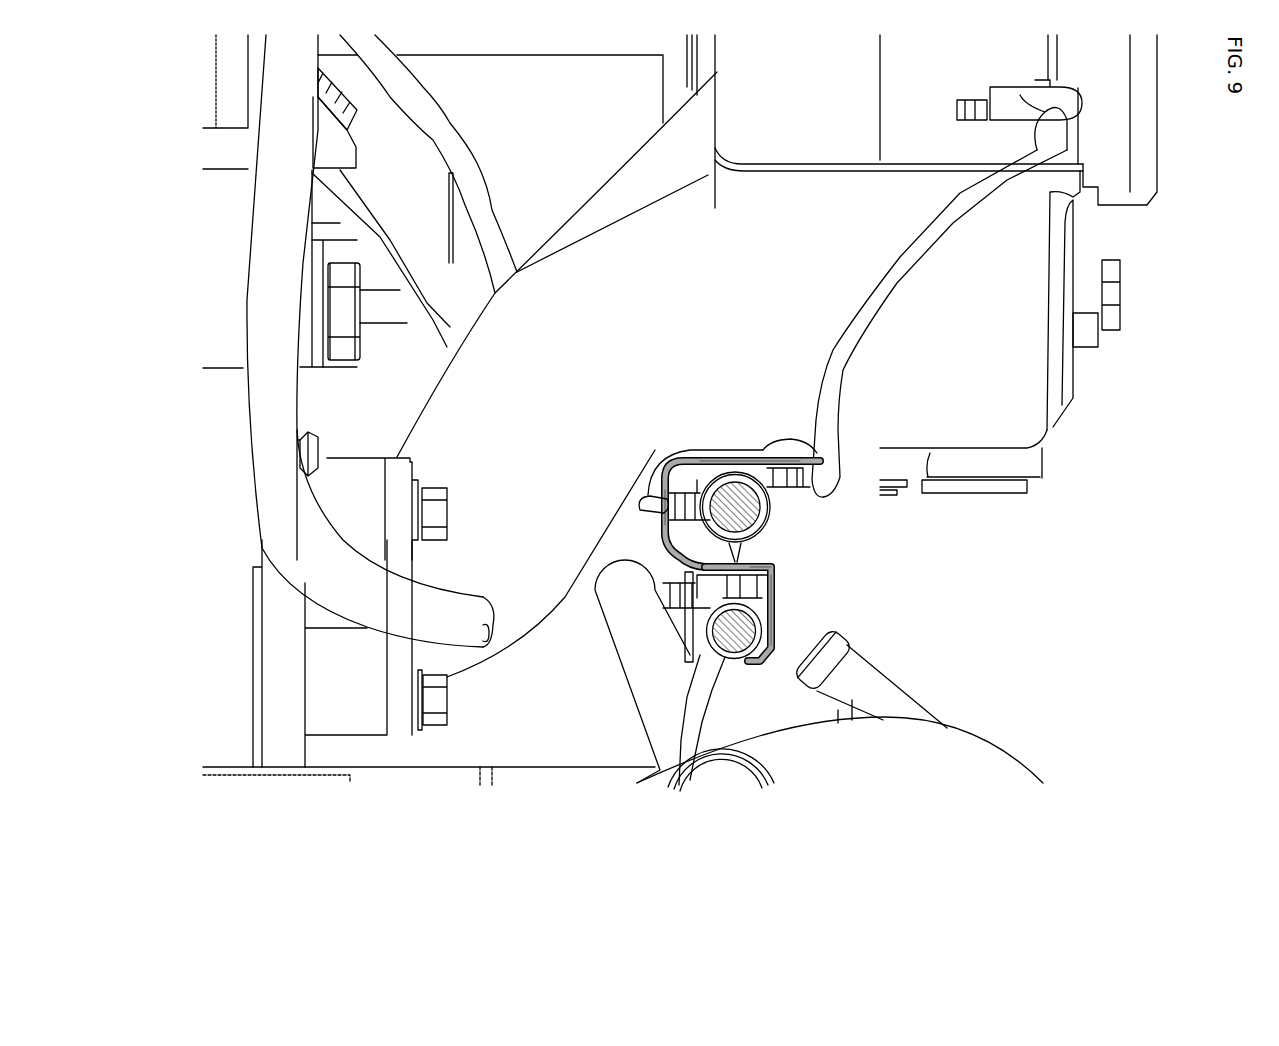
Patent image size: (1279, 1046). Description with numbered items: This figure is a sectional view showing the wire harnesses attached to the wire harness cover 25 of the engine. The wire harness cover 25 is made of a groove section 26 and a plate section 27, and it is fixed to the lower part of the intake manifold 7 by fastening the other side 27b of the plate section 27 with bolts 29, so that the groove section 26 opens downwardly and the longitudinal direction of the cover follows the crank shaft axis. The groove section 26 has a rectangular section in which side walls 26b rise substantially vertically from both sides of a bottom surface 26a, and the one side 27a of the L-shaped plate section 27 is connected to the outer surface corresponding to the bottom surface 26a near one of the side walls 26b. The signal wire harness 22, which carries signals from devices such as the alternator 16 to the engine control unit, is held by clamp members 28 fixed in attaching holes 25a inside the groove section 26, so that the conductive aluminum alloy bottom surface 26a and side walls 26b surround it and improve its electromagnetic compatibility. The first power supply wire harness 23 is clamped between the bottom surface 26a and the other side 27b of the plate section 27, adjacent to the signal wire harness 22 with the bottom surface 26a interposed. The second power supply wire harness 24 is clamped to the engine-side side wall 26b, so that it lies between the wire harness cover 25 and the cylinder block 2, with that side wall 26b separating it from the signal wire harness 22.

The cylinder block 2 is at (216, 541).
The intake manifold 7 is at (782, 294).
The alternator 16 is at (982, 751).
The signal wire harness 22 is at (473, 602).
The first power supply wire harness 23 is at (762, 505).
The second power supply wire harness 24 is at (650, 708).
The wire harness cover 25 is at (920, 559).
The attaching holes 25a is at (663, 487).
The groove section 26 is at (848, 606).
The bottom surface 26a is at (780, 572).
The side walls 26b is at (780, 611).
The plate section 27 is at (853, 519).
The one side 27a is at (662, 537).
The other side 27b is at (738, 466).
The clamp members 28 is at (652, 503).
The bolts 29 is at (792, 462).